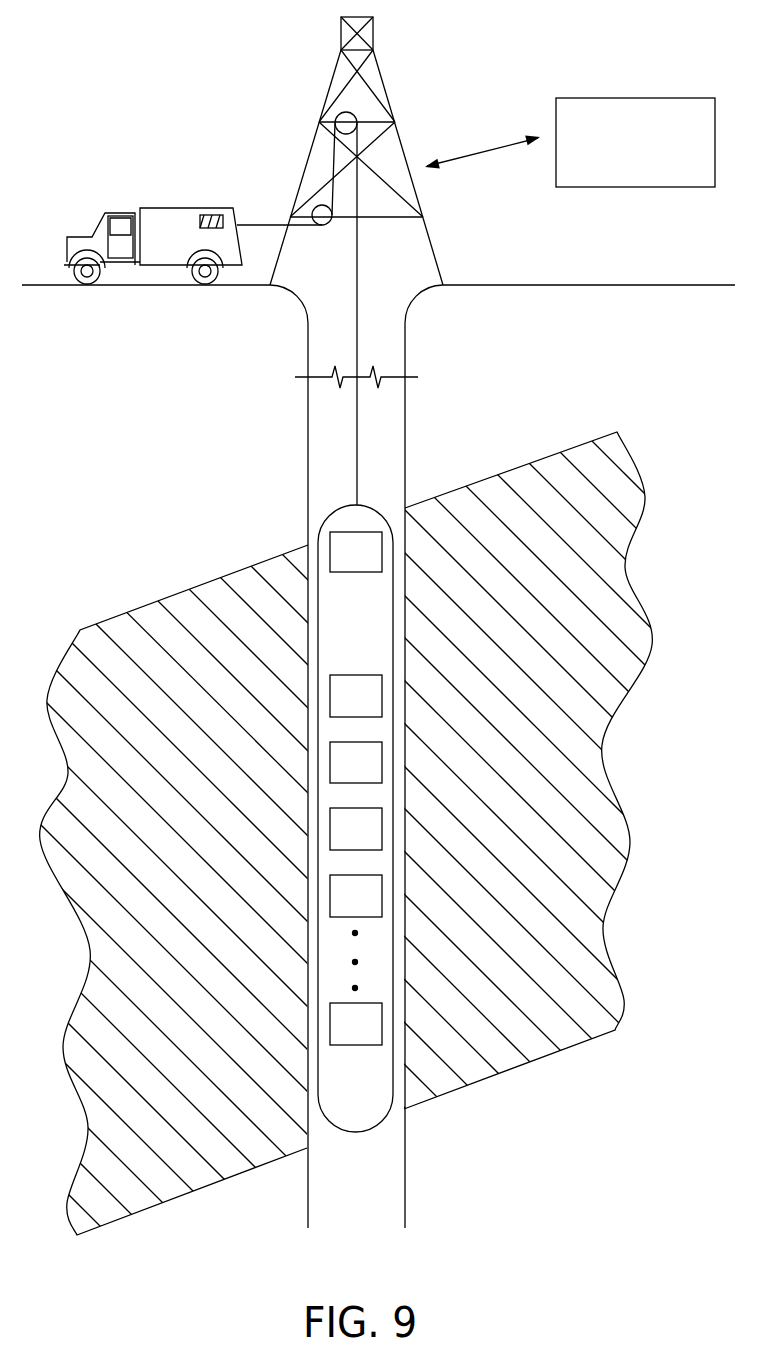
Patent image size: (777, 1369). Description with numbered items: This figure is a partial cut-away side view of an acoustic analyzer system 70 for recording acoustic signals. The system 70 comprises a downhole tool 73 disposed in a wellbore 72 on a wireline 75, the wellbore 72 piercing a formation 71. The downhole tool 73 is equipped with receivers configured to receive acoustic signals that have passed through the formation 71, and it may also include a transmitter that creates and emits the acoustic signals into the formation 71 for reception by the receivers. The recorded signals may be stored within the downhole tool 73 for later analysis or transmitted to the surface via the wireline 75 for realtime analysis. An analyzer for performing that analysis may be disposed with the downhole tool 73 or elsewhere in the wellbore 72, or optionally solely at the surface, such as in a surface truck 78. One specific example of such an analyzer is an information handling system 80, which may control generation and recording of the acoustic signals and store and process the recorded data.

The acoustic analyzer system 70 is at (288, 432).
The formation 71 is at (597, 518).
The wellbore 72 is at (383, 437).
The downhole tool 73 is at (335, 510).
The wireline 75 is at (357, 343).
The surface truck 78 is at (192, 200).
The information handling system 80 is at (570, 142).